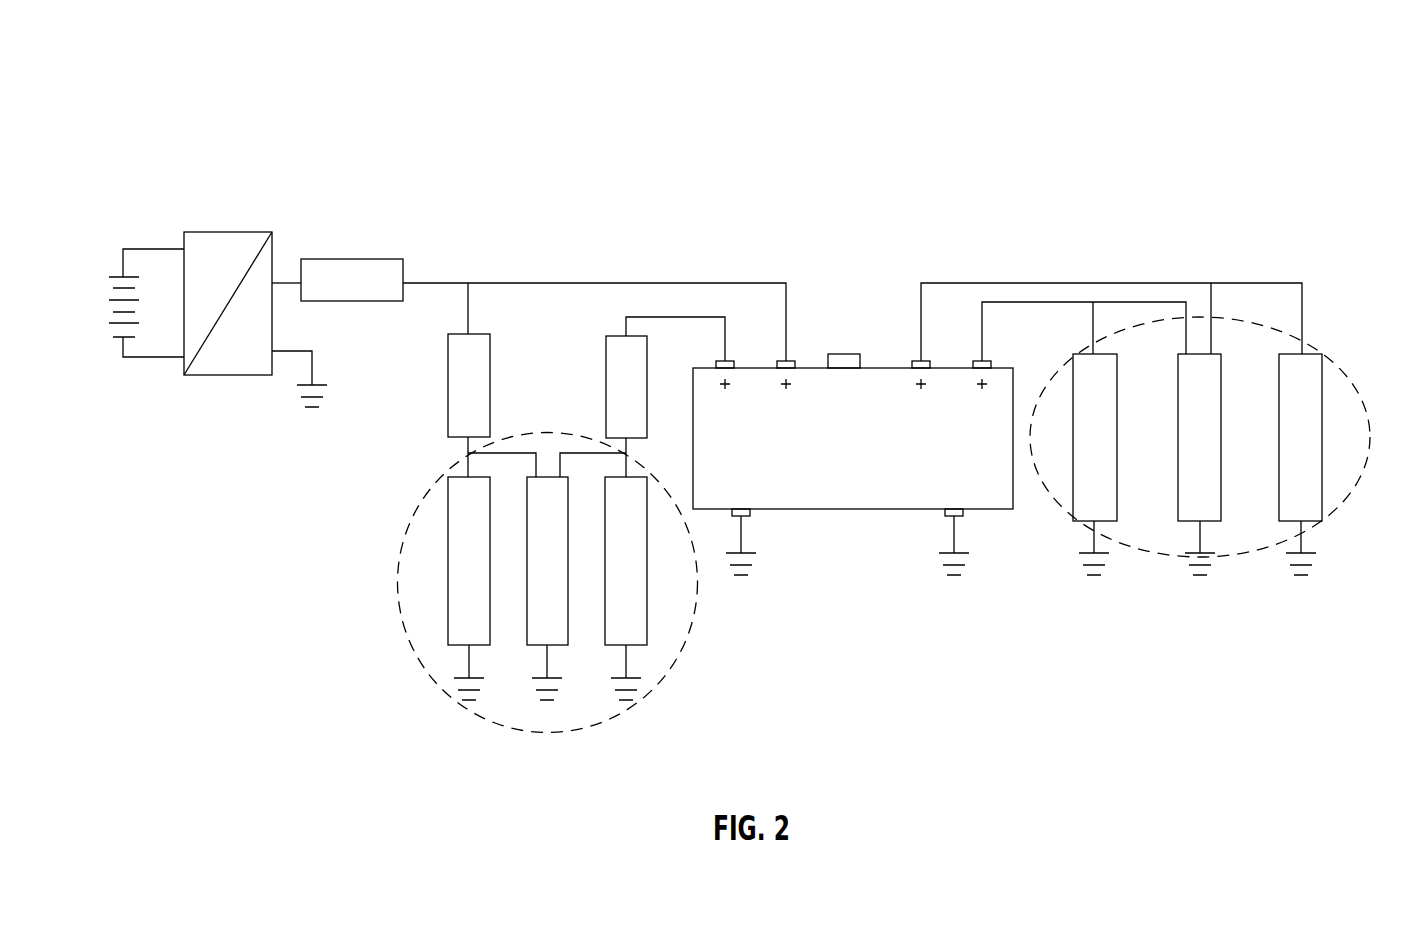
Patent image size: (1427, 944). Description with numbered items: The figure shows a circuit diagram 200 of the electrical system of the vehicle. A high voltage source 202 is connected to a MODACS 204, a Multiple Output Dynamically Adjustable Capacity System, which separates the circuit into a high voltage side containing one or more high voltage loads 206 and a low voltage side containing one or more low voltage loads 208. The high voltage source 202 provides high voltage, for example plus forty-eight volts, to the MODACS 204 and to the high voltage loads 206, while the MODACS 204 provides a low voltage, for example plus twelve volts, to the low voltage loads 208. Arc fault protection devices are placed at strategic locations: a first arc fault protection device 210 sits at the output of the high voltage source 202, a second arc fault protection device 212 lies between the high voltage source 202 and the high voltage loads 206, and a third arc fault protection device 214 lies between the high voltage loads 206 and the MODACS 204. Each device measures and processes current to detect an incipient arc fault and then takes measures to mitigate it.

The circuit diagram 200 is at (1261, 118).
The high voltage source 202 is at (220, 232).
The MODACS 204 is at (875, 367).
The high voltage loads 206 is at (459, 693).
The low voltage loads 208 is at (1337, 368).
The first arc fault protection device 210 is at (345, 259).
The second arc fault protection device 212 is at (448, 378).
The third arc fault protection device 214 is at (606, 378).